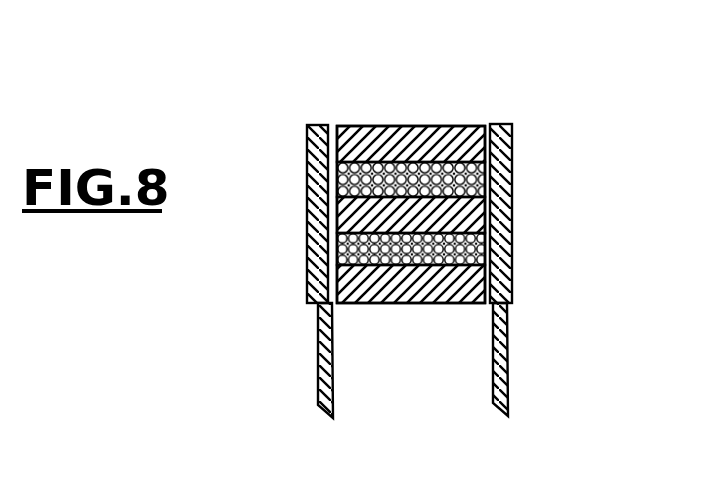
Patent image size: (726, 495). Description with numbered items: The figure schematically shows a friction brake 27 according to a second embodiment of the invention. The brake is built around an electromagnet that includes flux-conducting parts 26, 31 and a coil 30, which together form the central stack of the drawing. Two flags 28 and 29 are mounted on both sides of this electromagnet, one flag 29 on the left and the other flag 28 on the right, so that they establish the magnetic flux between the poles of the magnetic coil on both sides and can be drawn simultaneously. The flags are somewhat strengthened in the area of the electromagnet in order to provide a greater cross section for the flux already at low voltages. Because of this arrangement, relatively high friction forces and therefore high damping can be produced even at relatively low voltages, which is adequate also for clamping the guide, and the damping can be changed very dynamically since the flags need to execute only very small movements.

The flux-conducting part 26 is at (417, 126).
The friction brake 27 is at (452, 354).
The flag 28 is at (508, 347).
The flag 29 is at (319, 343).
The coil 30 is at (418, 267).
The flux-conducting part 31 is at (385, 213).